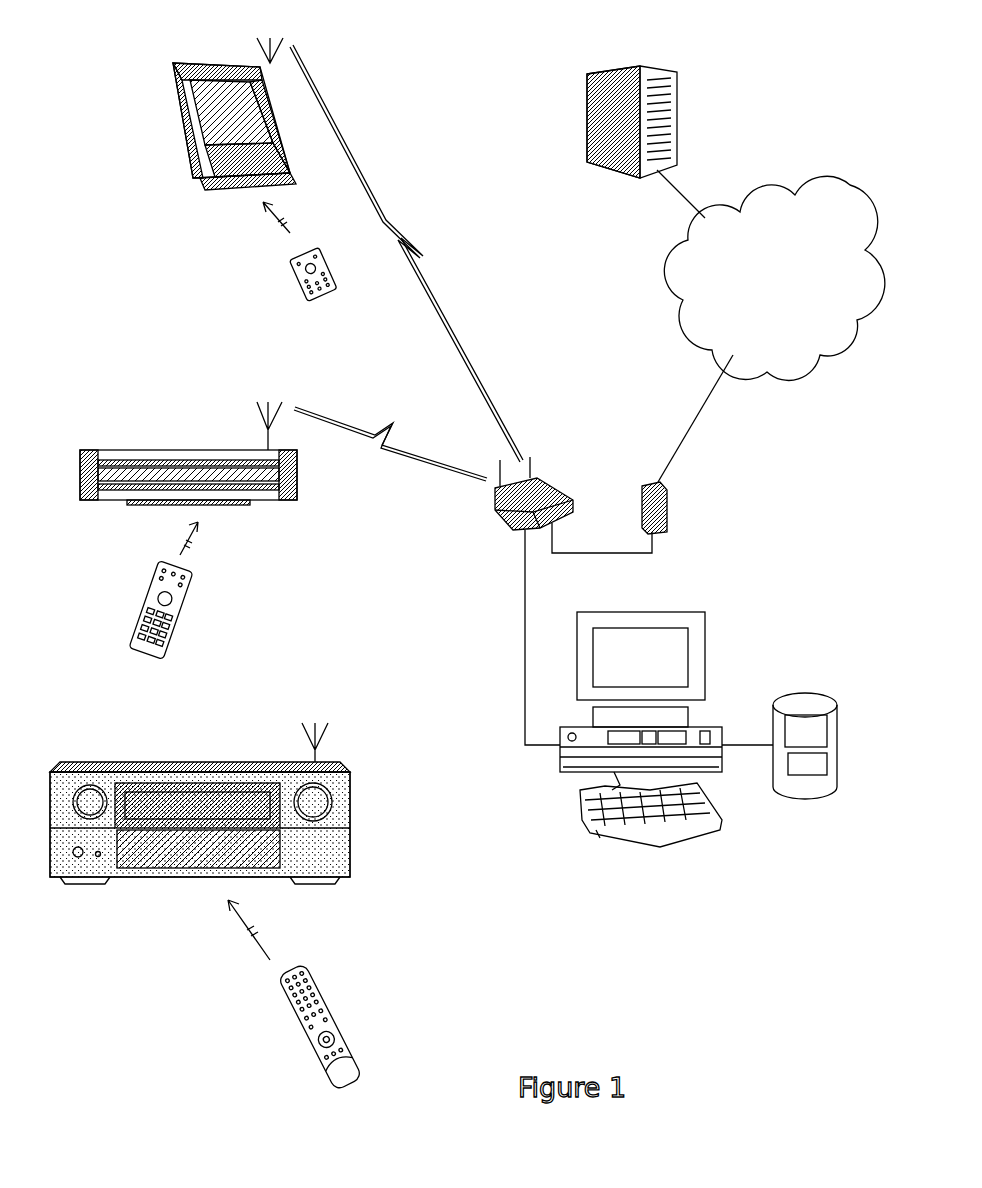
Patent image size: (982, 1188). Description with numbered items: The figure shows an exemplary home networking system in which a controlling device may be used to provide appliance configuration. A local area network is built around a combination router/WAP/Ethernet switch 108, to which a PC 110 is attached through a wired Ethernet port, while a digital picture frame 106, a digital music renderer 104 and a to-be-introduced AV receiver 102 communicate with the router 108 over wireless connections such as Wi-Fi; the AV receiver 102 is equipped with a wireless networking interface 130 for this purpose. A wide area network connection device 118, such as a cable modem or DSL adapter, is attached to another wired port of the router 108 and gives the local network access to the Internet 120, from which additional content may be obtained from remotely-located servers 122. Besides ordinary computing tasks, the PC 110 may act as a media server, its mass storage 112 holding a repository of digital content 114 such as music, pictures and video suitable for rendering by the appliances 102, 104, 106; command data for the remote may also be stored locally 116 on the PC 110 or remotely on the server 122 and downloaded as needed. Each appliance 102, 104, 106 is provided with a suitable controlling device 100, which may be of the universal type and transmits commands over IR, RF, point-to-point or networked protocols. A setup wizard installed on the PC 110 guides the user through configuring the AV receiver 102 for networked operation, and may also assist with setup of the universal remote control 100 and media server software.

The controlling device 100 is at (280, 257).
The AV receiver 102 is at (165, 877).
The digital music renderer 104 is at (183, 450).
The digital picture frame 106 is at (190, 148).
The combination router/WAP/Ethernet switch 108 is at (497, 535).
The PC 110 is at (677, 612).
The mass storage 112 is at (829, 751).
The digital content 114 is at (828, 730).
The locally stored command data library 116 is at (803, 777).
The wide area network connection device 118 is at (667, 508).
The Internet 120 is at (683, 327).
The remotely-located server 122 is at (632, 178).
The wireless networking interface 130 is at (325, 732).